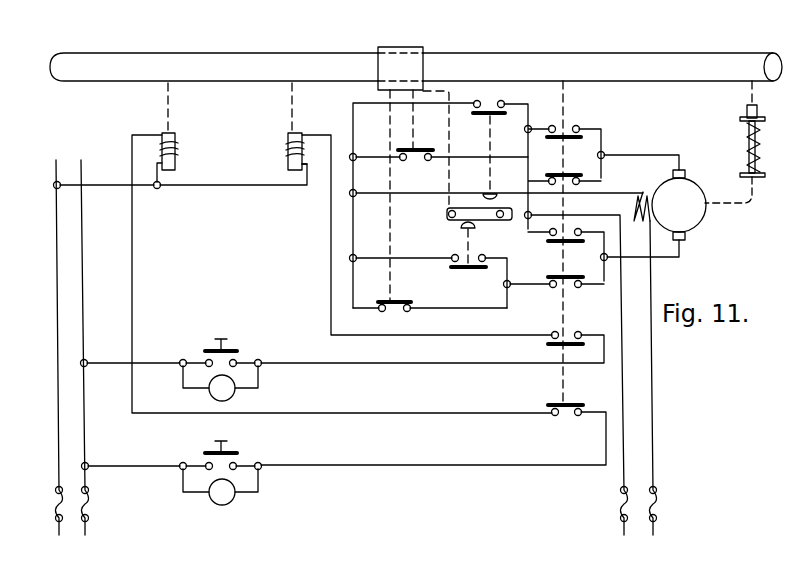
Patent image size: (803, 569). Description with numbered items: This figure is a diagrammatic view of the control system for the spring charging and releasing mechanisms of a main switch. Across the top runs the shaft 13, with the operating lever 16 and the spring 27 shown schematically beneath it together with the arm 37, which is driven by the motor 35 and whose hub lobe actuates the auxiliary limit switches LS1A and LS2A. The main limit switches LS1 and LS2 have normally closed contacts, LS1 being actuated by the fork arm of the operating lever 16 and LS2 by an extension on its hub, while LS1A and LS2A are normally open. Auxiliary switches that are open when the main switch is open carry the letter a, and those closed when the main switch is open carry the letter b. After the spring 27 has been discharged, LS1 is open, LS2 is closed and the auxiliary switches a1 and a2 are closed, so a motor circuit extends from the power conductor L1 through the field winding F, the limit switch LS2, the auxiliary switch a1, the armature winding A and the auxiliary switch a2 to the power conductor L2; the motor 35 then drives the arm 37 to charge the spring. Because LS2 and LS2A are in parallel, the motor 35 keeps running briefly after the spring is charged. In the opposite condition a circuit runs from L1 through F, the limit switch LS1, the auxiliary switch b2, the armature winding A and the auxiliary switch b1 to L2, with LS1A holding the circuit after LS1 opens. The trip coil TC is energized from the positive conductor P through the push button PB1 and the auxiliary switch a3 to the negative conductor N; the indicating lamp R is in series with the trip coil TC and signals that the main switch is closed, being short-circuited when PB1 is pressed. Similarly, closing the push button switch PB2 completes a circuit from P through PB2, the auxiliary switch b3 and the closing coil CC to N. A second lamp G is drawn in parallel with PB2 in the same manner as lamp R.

The shaft 13 is at (548, 54).
The operating lever 16 is at (378, 47).
The spring 27 is at (742, 136).
The motor 35 is at (715, 181).
The arm 37 is at (447, 210).
The closing coil CC is at (178, 148).
The trip coil TC is at (288, 149).
The limit switch LS1 is at (385, 312).
The auxiliary limit switch LS1A is at (455, 255).
The limit switch LS2 is at (427, 163).
The auxiliary limit switch LS2A is at (494, 110).
The auxiliary switch a1 is at (575, 125).
The auxiliary switch b1 is at (548, 172).
The auxiliary switch a2 is at (545, 238).
The auxiliary switch b2 is at (556, 289).
The auxiliary switch a3 is at (554, 330).
The auxiliary switch b3 is at (560, 417).
The field winding F is at (640, 189).
The armature winding A is at (705, 210).
The push button PB1 is at (230, 348).
The push button switch PB2 is at (232, 452).
The indicating lamp R is at (220, 383).
The green lamp G is at (220, 487).
The negative conductor N is at (59, 533).
The positive conductor P is at (86, 533).
The power conductor L1 is at (655, 530).
The power conductor L2 is at (622, 529).